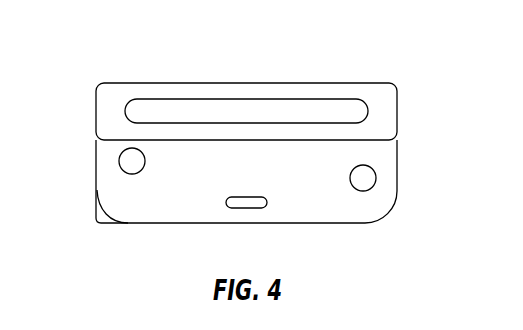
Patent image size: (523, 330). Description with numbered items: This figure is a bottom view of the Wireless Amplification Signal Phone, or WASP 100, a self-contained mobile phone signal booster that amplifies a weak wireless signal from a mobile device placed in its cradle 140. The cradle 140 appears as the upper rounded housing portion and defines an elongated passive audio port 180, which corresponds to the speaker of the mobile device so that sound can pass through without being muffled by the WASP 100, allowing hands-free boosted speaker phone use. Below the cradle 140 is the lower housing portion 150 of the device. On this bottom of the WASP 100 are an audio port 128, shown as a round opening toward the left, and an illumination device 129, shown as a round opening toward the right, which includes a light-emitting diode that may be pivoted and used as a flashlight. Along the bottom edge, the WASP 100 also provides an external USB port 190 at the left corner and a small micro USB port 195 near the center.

The Wireless Amplification Signal Phone (WASP) 100 is at (423, 62).
The cradle 140 is at (96, 110).
The passive audio port 180 is at (267, 112).
The lower housing portion 150 is at (397, 183).
The external USB port 190 is at (96, 205).
The audio port 128 is at (119, 160).
The illumination device 129 is at (376, 178).
The micro USB port 195 is at (248, 203).